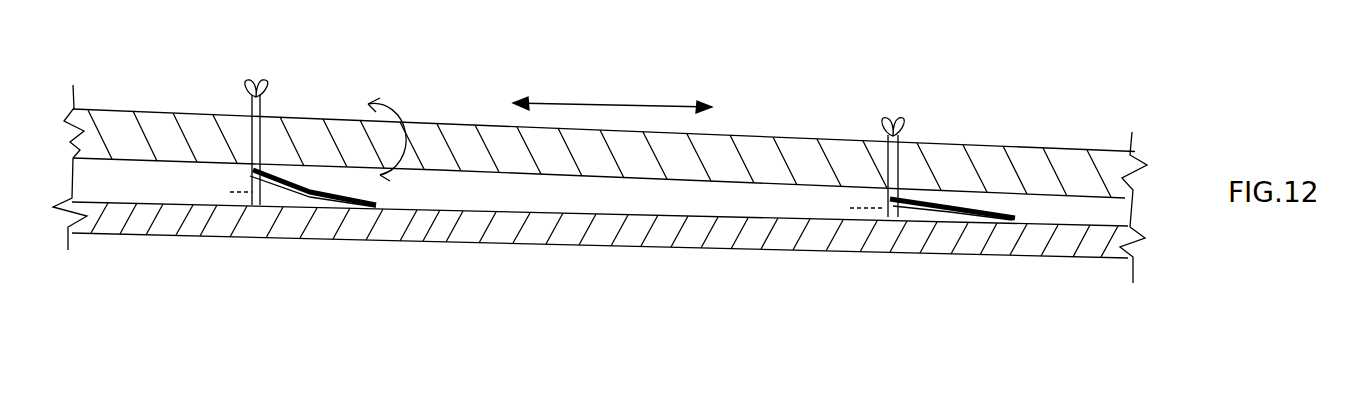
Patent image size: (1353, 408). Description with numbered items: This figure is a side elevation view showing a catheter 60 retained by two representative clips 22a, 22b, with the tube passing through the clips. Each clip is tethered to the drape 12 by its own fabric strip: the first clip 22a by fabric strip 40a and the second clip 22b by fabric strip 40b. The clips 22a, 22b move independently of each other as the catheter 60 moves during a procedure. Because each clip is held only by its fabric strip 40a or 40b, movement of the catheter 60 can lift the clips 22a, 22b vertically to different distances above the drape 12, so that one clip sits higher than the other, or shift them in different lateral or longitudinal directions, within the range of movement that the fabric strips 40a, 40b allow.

The drape 12 is at (483, 243).
The catheter 60 is at (965, 140).
The clip 22a is at (253, 76).
The clip 22b is at (903, 115).
The fabric strip 40a is at (285, 207).
The fabric strip 40b is at (915, 230).